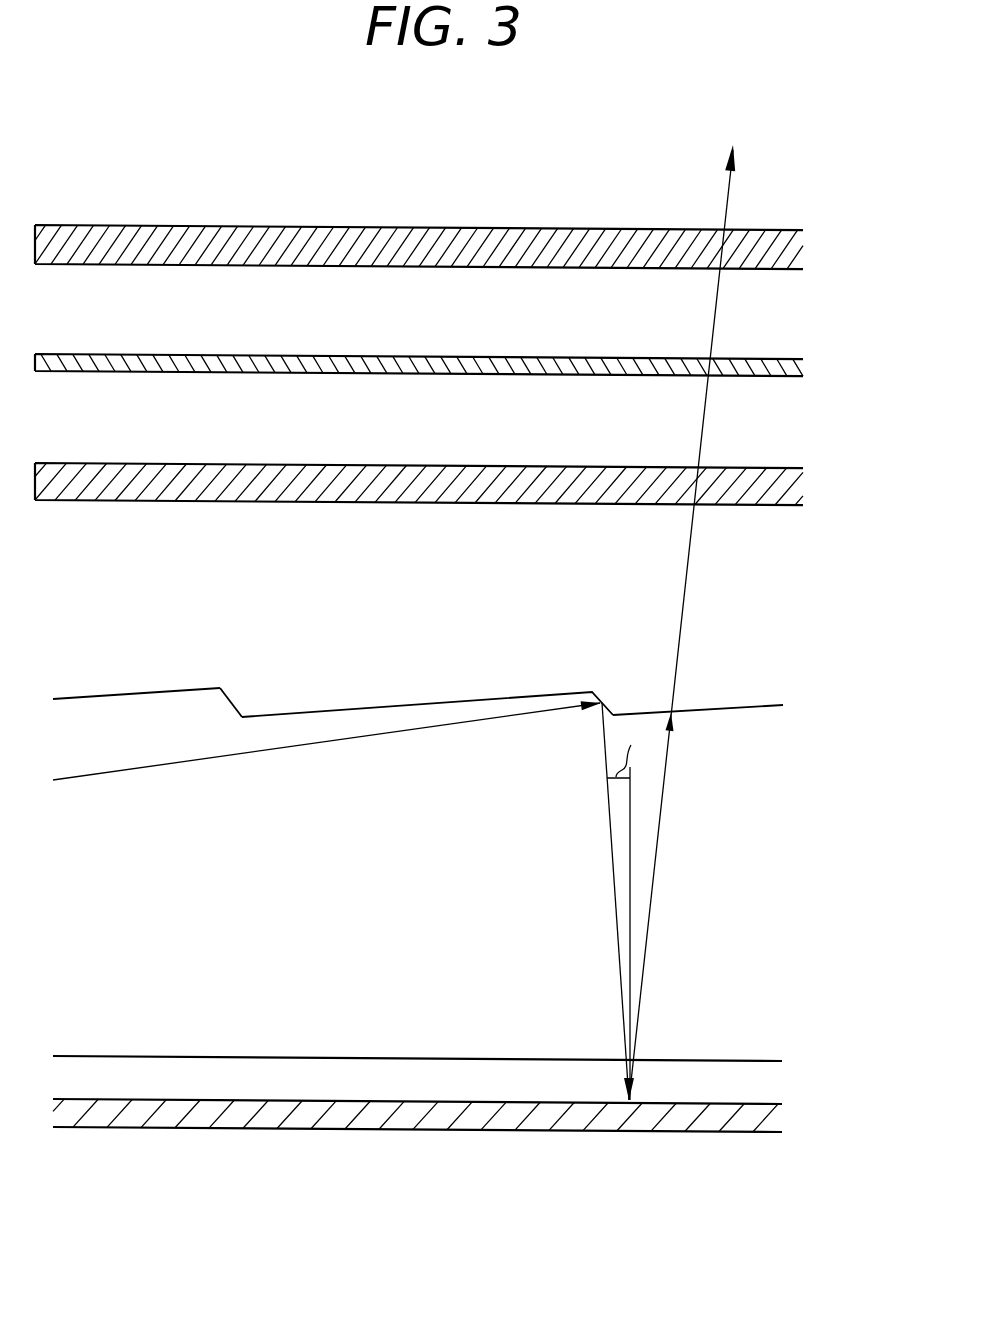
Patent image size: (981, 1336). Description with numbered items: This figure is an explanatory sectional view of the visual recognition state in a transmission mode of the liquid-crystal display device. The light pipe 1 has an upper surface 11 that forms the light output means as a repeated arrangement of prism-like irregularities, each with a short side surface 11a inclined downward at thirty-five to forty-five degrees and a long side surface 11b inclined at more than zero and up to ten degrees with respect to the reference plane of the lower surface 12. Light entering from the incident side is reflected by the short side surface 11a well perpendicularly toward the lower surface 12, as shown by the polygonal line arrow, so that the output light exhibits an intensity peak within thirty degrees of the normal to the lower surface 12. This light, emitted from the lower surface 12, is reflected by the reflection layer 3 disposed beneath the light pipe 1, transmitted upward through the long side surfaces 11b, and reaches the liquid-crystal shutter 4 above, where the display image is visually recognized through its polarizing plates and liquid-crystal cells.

The light pipe 1 is at (420, 608).
The reflection layer 3 is at (618, 1132).
The liquid-crystal shutter 4 is at (821, 224).
The upper surface 11 is at (417, 654).
The short side surface 11a is at (235, 698).
The long side surface 11b is at (345, 708).
The lower surface 12 is at (448, 1060).